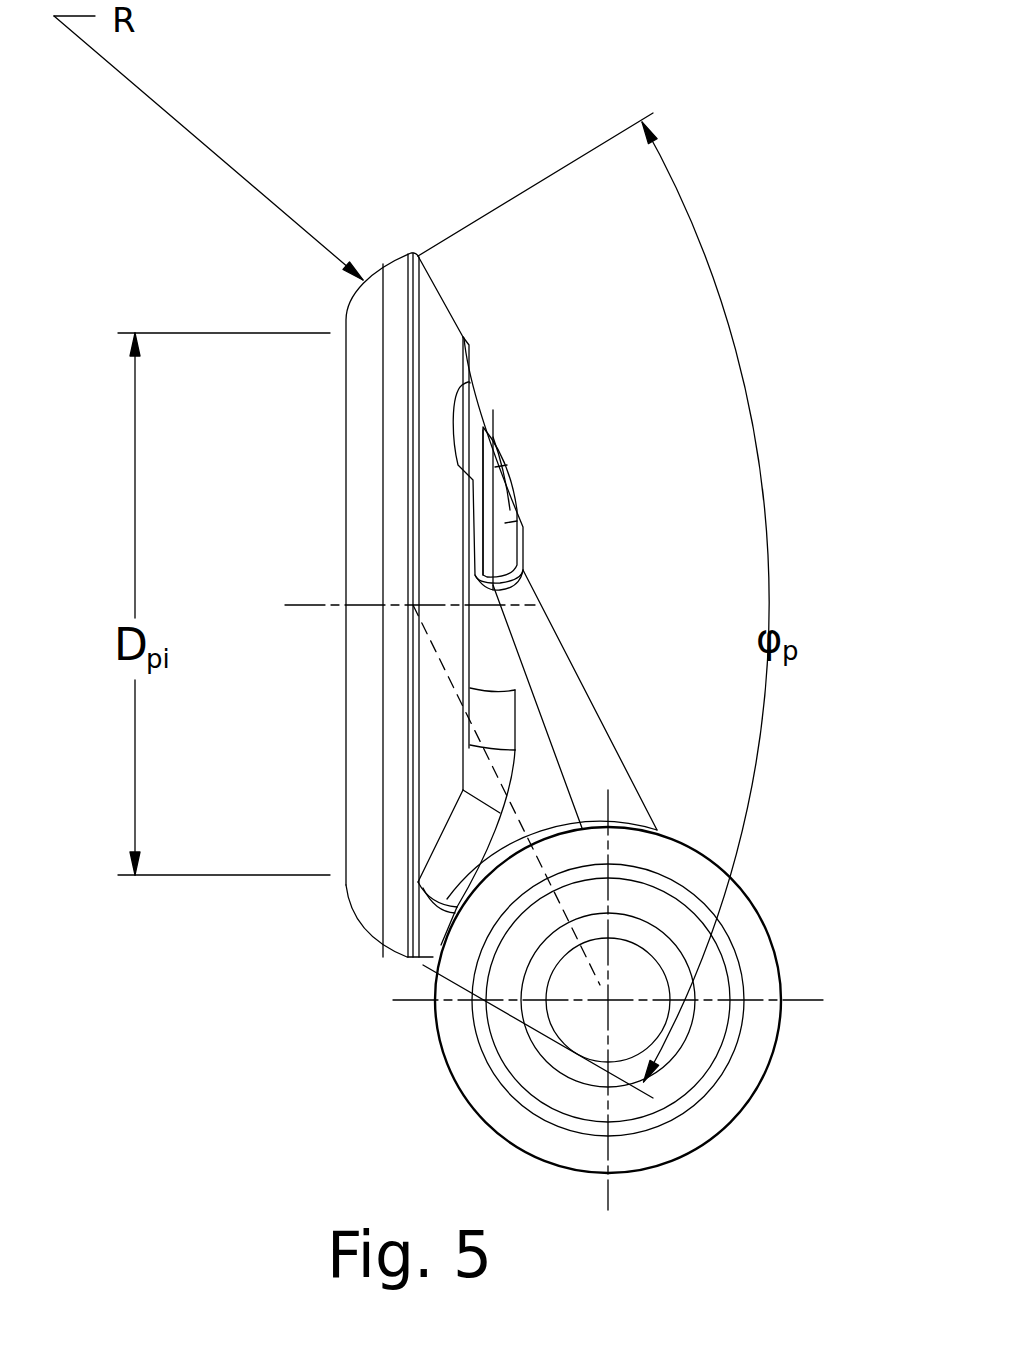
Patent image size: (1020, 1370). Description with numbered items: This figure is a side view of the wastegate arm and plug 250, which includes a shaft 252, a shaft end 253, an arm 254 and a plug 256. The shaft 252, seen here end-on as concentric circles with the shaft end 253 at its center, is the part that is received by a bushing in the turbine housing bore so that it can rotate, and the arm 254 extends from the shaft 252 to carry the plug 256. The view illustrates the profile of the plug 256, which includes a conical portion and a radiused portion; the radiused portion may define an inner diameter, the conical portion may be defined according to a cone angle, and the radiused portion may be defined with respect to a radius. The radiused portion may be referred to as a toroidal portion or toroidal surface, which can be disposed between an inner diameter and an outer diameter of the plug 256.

The wastegate arm and plug 250 is at (192, 255).
The shaft 252 is at (627, 907).
The shaft end 253 is at (627, 1009).
The arm 254 is at (583, 739).
The plug 256 is at (365, 460).